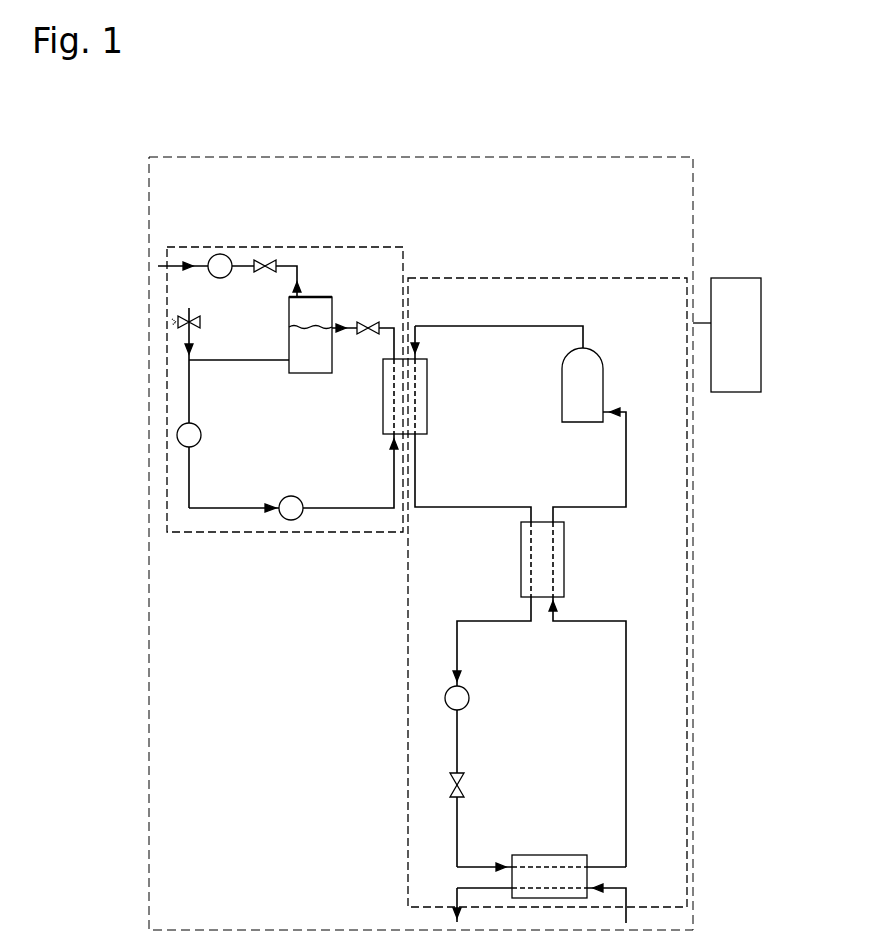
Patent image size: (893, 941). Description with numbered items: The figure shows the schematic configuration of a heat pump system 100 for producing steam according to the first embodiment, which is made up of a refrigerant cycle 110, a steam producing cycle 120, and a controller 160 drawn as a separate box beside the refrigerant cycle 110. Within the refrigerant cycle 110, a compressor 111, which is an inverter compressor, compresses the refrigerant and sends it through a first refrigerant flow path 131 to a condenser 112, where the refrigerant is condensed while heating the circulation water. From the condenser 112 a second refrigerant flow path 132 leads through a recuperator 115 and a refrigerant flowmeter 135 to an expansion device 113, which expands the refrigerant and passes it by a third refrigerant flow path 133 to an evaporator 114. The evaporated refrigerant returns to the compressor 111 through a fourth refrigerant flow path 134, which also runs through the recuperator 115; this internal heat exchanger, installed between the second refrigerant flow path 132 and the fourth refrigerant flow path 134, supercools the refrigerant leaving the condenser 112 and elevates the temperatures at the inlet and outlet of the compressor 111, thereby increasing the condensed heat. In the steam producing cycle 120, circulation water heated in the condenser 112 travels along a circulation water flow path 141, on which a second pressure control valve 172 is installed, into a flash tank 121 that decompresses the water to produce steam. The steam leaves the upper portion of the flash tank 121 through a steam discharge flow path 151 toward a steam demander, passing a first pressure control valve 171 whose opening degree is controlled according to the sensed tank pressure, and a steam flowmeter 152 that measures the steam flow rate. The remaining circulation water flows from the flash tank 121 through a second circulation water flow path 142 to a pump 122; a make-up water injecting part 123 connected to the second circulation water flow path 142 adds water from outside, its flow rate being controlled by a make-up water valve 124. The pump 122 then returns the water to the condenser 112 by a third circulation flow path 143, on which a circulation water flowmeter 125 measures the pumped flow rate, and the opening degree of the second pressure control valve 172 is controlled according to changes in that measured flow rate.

The heat pump system for producing steam 100 is at (490, 125).
The refrigerant cycle 110 is at (610, 278).
The compressor 111 is at (600, 357).
The condenser 112 is at (427, 397).
The expansion device 113 is at (465, 790).
The evaporator 114 is at (560, 855).
The recuperator 115 is at (564, 560).
The steam producing cycle 120 is at (370, 247).
The flash tank 121 is at (322, 297).
The pump 122 is at (201, 433).
The make-up water injecting part 123 is at (189, 338).
The make-up water valve 124 is at (198, 316).
The circulation water flowmeter 125 is at (291, 520).
The first refrigerant flow path 131 is at (503, 326).
The second refrigerant flow path 132 is at (488, 507).
The third refrigerant flow path 133 is at (457, 845).
The fourth refrigerant flow path 134 is at (602, 507).
The refrigerant flowmeter 135 is at (469, 698).
The circulation water flow path 141 is at (383, 328).
The second circulation water flow path 142 is at (226, 360).
The third circulation flow path 143 is at (235, 508).
The steam discharge flow path 151 is at (297, 266).
The steam flowmeter 152 is at (220, 254).
The controller 160 is at (711, 278).
The first pressure control valve 171 is at (262, 260).
The second pressure control valve 172 is at (372, 337).